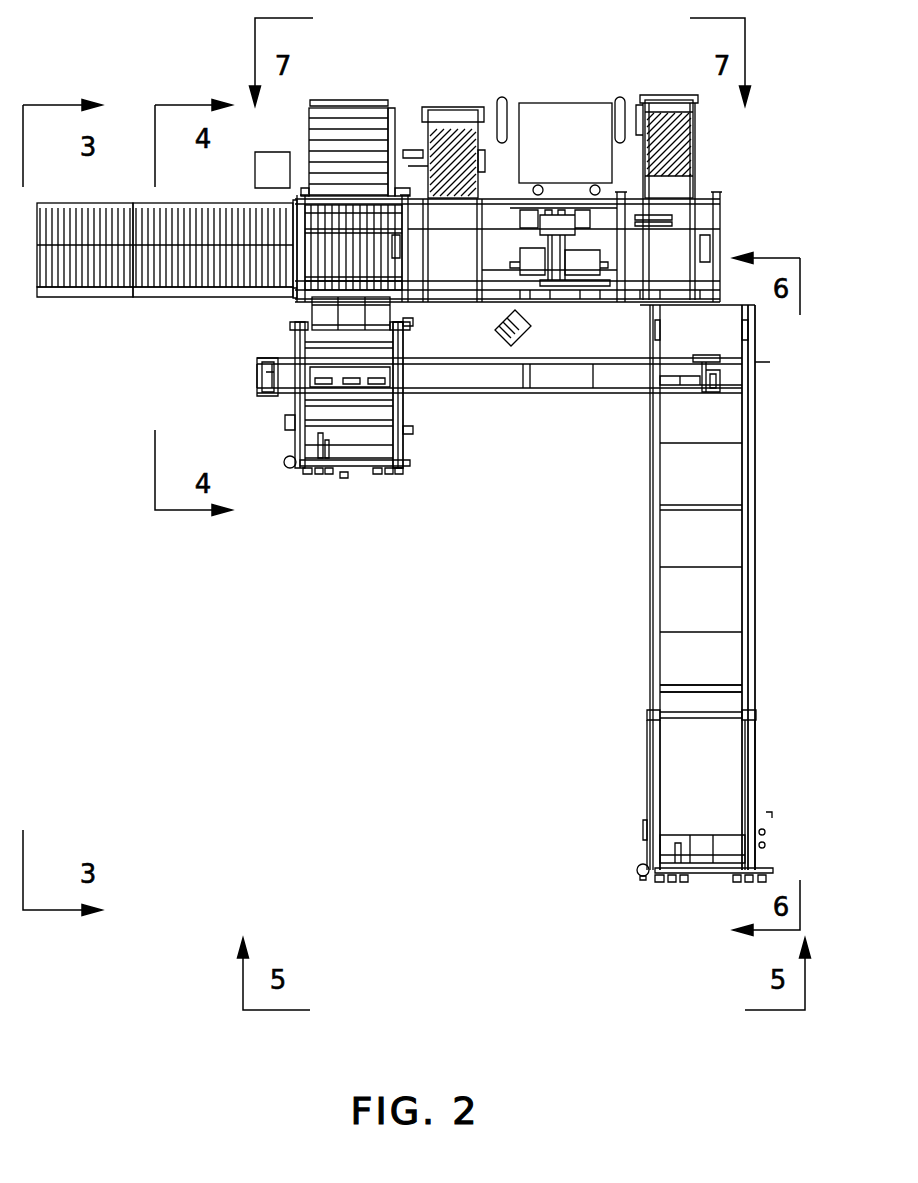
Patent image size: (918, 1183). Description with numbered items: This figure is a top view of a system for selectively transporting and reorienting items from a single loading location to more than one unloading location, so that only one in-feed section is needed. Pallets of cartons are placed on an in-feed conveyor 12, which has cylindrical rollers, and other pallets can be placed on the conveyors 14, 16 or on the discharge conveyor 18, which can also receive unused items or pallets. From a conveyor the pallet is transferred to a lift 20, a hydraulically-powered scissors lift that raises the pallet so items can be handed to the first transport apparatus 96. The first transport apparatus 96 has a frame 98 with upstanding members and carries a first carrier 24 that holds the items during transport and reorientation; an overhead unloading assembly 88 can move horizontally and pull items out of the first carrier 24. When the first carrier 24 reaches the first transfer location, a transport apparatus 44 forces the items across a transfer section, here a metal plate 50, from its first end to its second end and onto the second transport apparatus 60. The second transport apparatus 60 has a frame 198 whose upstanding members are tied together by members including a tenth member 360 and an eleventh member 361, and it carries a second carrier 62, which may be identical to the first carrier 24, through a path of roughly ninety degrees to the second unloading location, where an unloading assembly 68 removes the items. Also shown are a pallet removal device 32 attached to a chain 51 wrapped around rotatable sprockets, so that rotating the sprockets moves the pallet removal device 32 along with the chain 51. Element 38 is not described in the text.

The in-feed conveyor 12 is at (66, 297).
The conveyor 14 is at (180, 203).
The conveyor 16 is at (265, 297).
The discharge conveyor 18 is at (372, 100).
The lift 20 is at (322, 222).
The first carrier 24 is at (315, 338).
The pallet removal device 32 is at (585, 250).
The control box 38 is at (555, 103).
The transport apparatus 44 is at (268, 385).
The plate 50 is at (557, 378).
The chain 51 is at (693, 145).
The second transport apparatus 60 is at (622, 648).
The second carrier 62 is at (755, 362).
The unloading assembly 68 is at (640, 878).
The unloading assembly 88 is at (288, 470).
The first transport apparatus 96 is at (363, 488).
The frame 98 is at (403, 402).
The frame 198 is at (774, 566).
The tenth member 360 is at (655, 690).
The eleventh member 361 is at (755, 500).